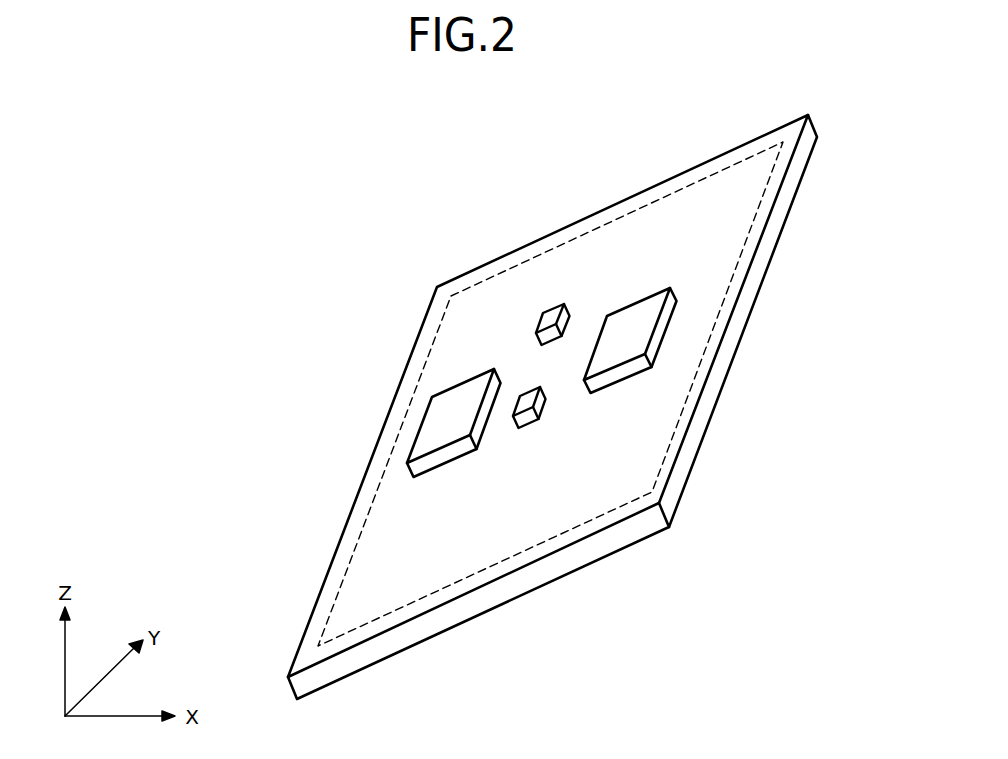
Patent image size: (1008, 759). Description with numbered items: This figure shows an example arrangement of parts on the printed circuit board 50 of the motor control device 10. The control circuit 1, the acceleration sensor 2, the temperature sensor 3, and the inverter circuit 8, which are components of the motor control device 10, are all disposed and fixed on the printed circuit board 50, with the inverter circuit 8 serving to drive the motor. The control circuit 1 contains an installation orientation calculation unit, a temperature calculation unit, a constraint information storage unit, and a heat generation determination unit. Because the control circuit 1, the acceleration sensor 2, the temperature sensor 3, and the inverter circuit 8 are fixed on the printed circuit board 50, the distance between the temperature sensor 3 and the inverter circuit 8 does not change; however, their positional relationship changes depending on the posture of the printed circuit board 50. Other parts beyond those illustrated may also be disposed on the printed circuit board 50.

The printed circuit board 50 is at (803, 178).
The motor control device 10 is at (744, 250).
The control circuit 1 is at (666, 332).
The inverter circuit 8 is at (420, 428).
The acceleration sensor 2 is at (553, 306).
The temperature sensor 3 is at (523, 427).